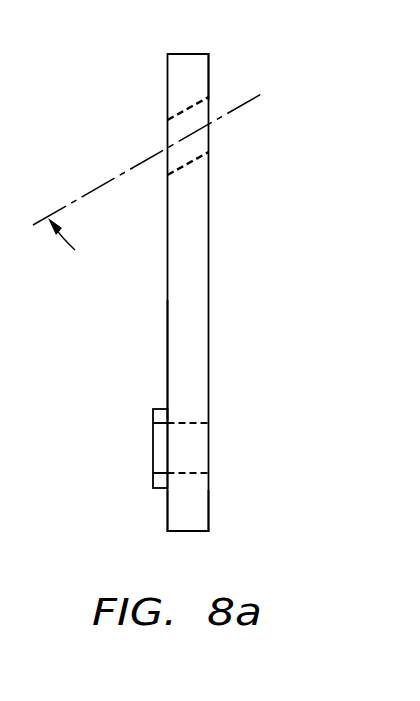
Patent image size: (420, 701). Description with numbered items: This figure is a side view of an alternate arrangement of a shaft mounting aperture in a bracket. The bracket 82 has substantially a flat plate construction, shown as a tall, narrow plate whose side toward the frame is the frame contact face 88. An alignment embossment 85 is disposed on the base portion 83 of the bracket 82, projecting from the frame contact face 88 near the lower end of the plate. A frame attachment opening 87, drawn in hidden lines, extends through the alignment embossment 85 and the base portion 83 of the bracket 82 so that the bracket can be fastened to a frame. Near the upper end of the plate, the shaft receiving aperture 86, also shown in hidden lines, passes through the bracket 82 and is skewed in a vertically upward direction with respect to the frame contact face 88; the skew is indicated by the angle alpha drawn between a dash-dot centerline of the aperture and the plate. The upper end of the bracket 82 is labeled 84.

The bracket 82 is at (210, 353).
The base portion 83 is at (177, 505).
The upper end of bar 84 is at (203, 75).
The alignment embossment 85 is at (160, 463).
The shaft receiving aperture 86 is at (207, 150).
The frame attachment opening 87 is at (185, 425).
The frame contact face 88 is at (167, 357).
The slot inclination angle alpha is at (168, 285).